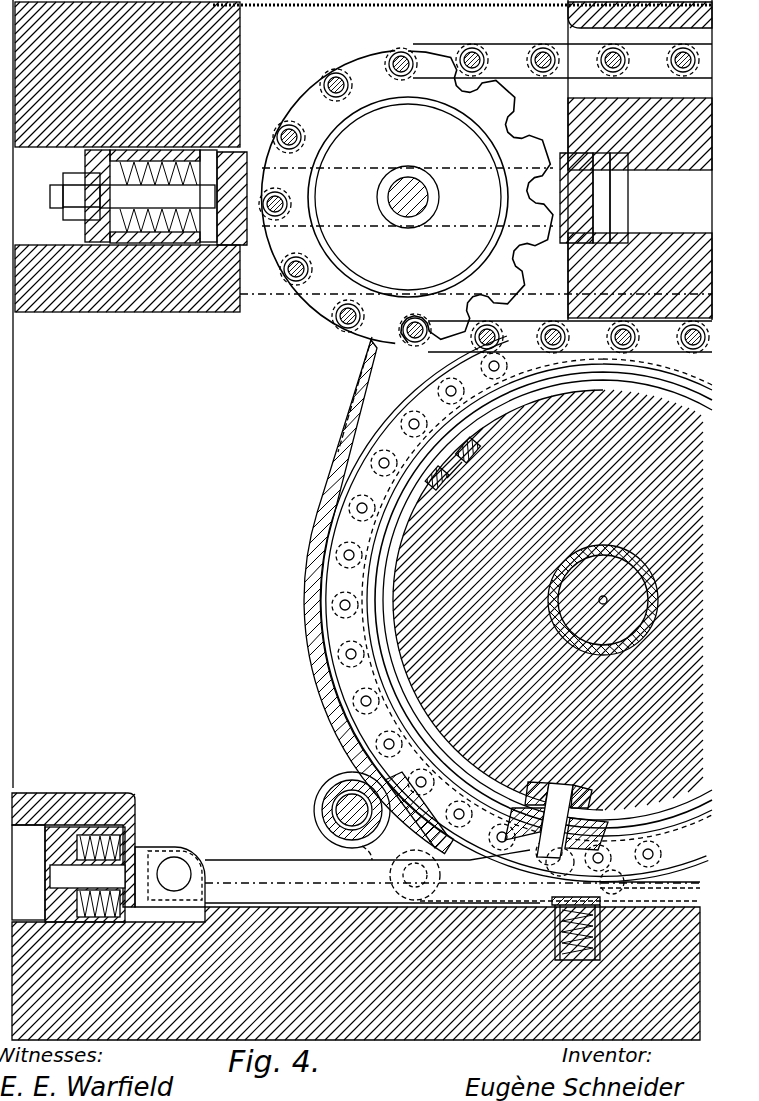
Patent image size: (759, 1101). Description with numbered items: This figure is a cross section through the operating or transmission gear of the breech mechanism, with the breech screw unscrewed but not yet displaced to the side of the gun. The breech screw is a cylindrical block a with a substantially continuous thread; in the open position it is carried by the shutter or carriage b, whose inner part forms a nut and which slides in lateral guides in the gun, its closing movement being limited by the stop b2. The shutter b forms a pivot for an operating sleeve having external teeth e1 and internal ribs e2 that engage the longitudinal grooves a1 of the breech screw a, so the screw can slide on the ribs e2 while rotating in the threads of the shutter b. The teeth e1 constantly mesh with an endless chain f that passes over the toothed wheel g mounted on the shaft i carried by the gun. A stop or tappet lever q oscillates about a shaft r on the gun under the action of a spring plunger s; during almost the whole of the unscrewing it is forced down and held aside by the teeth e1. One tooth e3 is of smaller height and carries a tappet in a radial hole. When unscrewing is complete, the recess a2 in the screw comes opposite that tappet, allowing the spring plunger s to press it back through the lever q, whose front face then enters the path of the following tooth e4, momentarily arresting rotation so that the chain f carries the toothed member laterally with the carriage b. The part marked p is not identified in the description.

The breech screw a is at (668, 800).
The longitudinal grooves a1 is at (470, 470).
The recess a2 is at (551, 800).
The shutter or carriage b is at (366, 392).
The stop b2 is at (128, 846).
The external teeth e1 is at (336, 622).
The internal ribs e2 is at (466, 466).
The frusto-conical tooth e3 is at (552, 860).
The tooth e4 is at (612, 880).
The endless chain f is at (575, 800).
The toothed wheel g is at (317, 301).
The shaft i is at (410, 188).
The link rod p is at (376, 930).
The tappet lever q is at (340, 893).
The shaft r is at (178, 878).
The spring plunger s is at (570, 920).